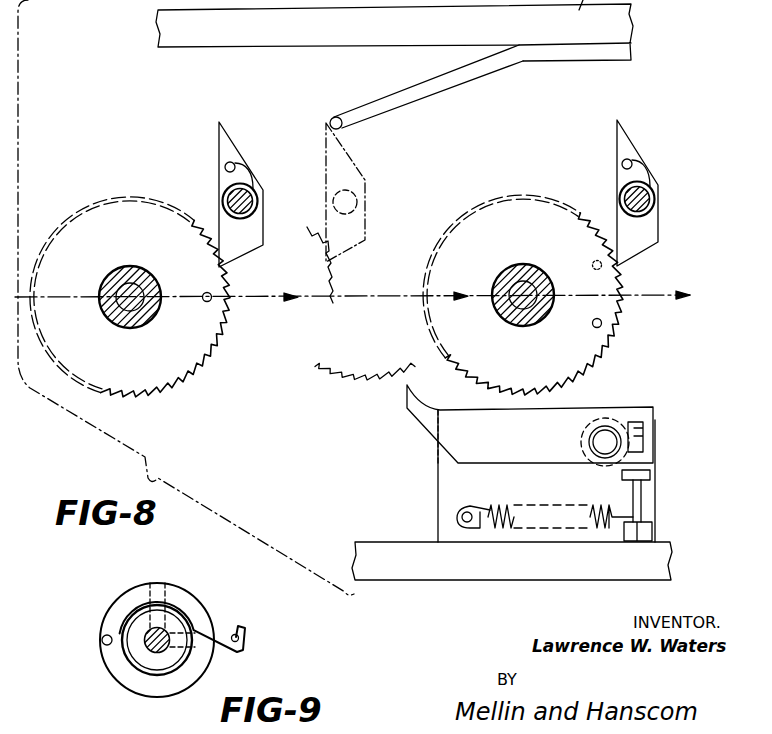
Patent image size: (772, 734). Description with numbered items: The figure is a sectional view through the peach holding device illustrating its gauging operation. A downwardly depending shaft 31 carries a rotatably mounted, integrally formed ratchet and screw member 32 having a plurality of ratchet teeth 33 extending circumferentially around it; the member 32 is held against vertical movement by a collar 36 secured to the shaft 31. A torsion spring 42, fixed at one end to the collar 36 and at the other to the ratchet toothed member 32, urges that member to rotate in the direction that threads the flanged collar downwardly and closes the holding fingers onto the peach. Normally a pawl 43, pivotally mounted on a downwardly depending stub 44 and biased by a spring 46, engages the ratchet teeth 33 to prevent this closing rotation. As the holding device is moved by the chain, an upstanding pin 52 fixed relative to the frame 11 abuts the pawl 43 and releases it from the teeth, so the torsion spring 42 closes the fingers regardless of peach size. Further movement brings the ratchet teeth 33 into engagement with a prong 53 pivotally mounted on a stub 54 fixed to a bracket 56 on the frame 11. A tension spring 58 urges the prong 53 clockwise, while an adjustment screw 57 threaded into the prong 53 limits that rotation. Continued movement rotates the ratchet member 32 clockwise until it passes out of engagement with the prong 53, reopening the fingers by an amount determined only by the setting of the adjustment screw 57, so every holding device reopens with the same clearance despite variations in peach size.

In FIG. 8, the frame 11 is at (378, 546).
In FIG. 8, the shaft 31 is at (133, 283).
In FIG. 9, the shaft 31 is at (150, 650).
In FIG. 8, the ratchet and screw member 32 is at (140, 359).
In FIG. 8, the ratchet teeth 33 is at (225, 326).
In FIG. 9, the collar 36 is at (112, 614).
In FIG. 9, the torsion spring 42 is at (180, 622).
In FIG. 8, the pawl 43 is at (219, 148).
In FIG. 8, the stub 44 is at (652, 201).
In FIG. 8, the spring 46 is at (648, 180).
In FIG. 8, the pin 52 is at (340, 118).
In FIG. 8, the prong 53 is at (427, 422).
In FIG. 8, the stub 54 is at (603, 450).
In FIG. 8, the bracket 56 is at (438, 478).
In FIG. 8, the adjustment screw 57 is at (648, 496).
In FIG. 8, the tension spring 58 is at (522, 503).